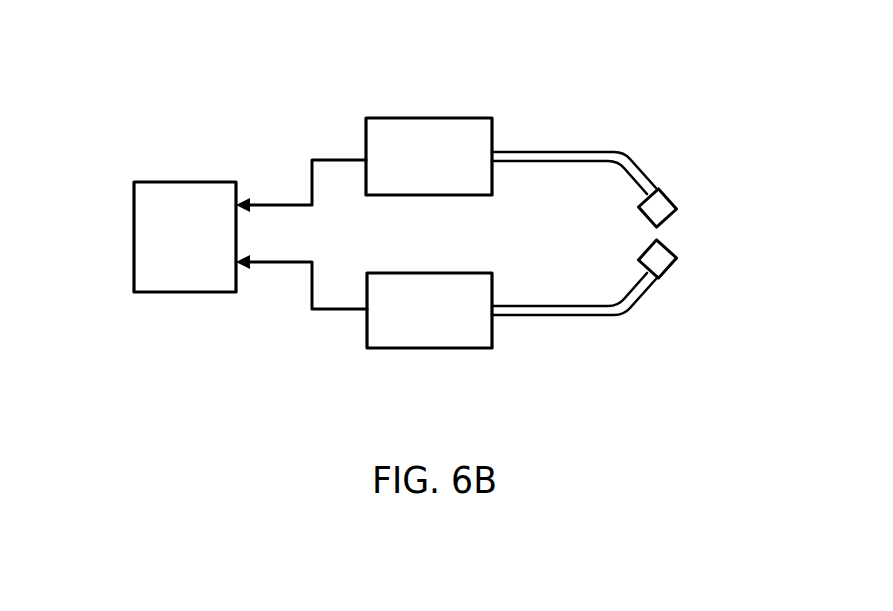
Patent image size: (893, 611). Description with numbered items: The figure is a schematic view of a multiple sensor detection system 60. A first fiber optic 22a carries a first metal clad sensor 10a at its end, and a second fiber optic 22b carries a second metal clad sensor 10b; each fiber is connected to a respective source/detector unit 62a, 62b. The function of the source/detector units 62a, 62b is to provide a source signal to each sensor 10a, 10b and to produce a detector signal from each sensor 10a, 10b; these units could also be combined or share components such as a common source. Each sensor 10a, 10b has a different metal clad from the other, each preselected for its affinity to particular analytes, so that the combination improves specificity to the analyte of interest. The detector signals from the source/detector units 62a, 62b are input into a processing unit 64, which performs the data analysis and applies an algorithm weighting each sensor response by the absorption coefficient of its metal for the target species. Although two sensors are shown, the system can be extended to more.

The detection system 60 is at (236, 55).
The processing unit 64 is at (134, 235).
The source/detector unit 62a is at (425, 118).
The source/detector unit 62b is at (422, 348).
The first fiber optic 22a is at (547, 150).
The second fiber optic 22b is at (545, 316).
The first metal clad sensor 10a is at (672, 196).
The second metal clad sensor 10b is at (669, 266).